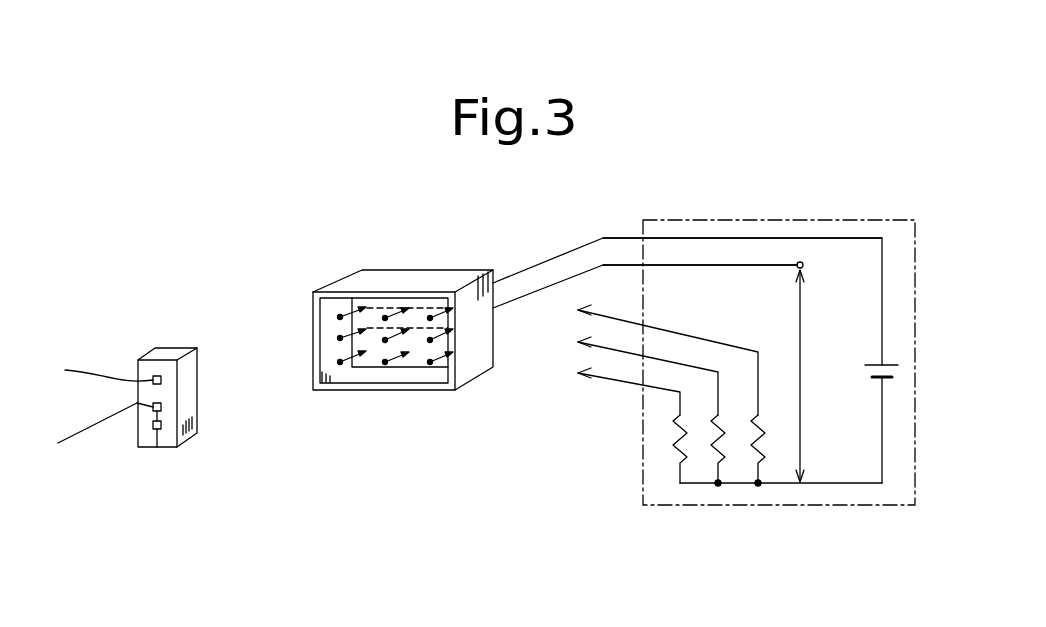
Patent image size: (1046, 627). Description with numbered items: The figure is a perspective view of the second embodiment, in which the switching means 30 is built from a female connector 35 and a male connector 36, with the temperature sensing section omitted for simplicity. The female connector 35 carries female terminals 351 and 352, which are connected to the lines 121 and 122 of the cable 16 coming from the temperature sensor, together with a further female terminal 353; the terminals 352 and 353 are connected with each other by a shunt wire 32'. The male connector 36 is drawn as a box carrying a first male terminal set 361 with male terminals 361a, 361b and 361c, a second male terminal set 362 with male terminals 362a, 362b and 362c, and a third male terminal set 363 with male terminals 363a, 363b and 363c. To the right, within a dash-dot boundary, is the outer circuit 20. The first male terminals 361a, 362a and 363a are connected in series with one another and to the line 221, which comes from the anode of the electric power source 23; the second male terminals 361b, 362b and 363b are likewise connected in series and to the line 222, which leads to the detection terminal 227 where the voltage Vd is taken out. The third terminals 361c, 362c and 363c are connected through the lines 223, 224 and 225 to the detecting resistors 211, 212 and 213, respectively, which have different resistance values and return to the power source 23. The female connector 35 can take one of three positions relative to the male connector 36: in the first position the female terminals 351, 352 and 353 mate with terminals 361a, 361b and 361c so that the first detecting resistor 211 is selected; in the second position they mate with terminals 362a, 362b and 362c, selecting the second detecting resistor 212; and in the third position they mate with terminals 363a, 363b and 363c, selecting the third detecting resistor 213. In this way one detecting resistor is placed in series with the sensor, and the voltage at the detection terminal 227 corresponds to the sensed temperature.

The switching means 30 is at (310, 226).
The male connector 36 is at (416, 256).
The first male terminal set 361 is at (222, 218).
The first male terminal 361a is at (340, 316).
The second male terminal 361b is at (340, 337).
The third male terminal 361c is at (340, 361).
The second male terminal set 362 is at (300, 408).
The first male terminal 362a is at (384, 320).
The second male terminal 362b is at (386, 342).
The third male terminal 362c is at (386, 364).
The third male terminal set 363 is at (540, 408).
The first male terminal 363a is at (440, 316).
The second male terminal 363b is at (432, 342).
The third male terminal 363c is at (432, 363).
The female connector 35 is at (153, 327).
The female terminal 351 is at (162, 380).
The female terminal 352 is at (162, 407).
The female terminal 353 is at (157, 431).
The shunt wire 32' is at (127, 448).
The cable 16 is at (135, 517).
The line 121 is at (100, 378).
The line 122 is at (73, 436).
The outer circuit 20 is at (822, 220).
The line 221 is at (662, 238).
The line 222 is at (687, 265).
The line 223 is at (668, 356).
The line 224 is at (683, 364).
The line 225 is at (662, 392).
The detection terminal 227 is at (824, 263).
The detecting resistor 211 is at (767, 443).
The detecting resistor 212 is at (713, 443).
The detecting resistor 213 is at (670, 447).
The electric power source 23 is at (898, 375).